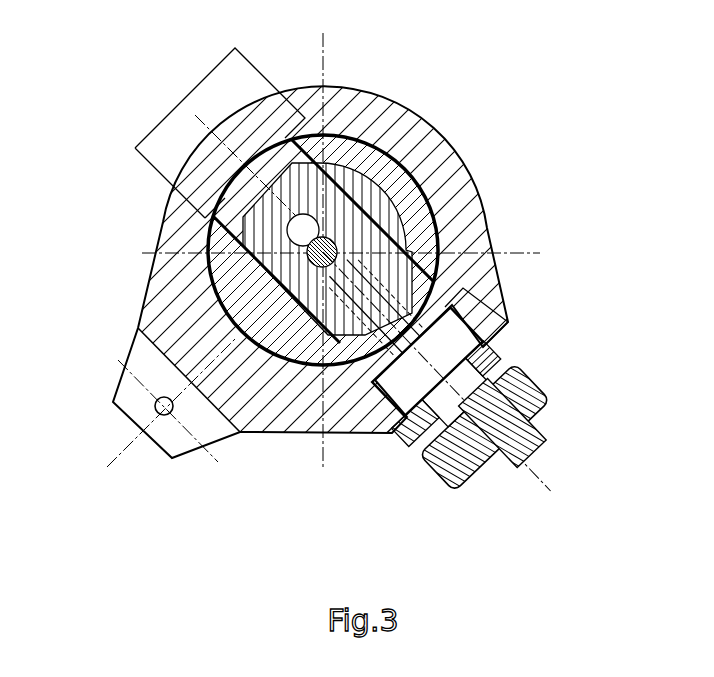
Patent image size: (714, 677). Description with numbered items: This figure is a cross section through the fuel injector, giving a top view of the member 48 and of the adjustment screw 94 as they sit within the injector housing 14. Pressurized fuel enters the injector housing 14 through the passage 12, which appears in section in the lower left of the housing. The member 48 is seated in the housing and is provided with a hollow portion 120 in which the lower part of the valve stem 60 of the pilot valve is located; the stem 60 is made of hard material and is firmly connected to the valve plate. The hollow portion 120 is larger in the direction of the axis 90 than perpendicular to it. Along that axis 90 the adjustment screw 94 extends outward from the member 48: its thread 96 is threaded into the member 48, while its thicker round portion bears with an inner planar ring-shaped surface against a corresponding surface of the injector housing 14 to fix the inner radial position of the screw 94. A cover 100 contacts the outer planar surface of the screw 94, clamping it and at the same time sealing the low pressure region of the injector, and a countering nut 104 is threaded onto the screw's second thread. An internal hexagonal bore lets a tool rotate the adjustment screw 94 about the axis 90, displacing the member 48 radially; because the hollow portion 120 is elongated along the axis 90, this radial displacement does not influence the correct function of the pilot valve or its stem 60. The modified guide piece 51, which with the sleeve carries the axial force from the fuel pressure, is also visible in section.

The passage 12 is at (164, 410).
The injector housing 14 is at (160, 280).
The member 48 is at (408, 113).
The modified guide piece 51 is at (183, 100).
The valve stem 60 is at (340, 248).
The axis 90 is at (527, 468).
The adjustment screw 94 is at (470, 311).
The thread 96 is at (318, 418).
The cover 100 is at (405, 432).
The countering nut 104 is at (447, 460).
The hollow portion 120 is at (338, 211).